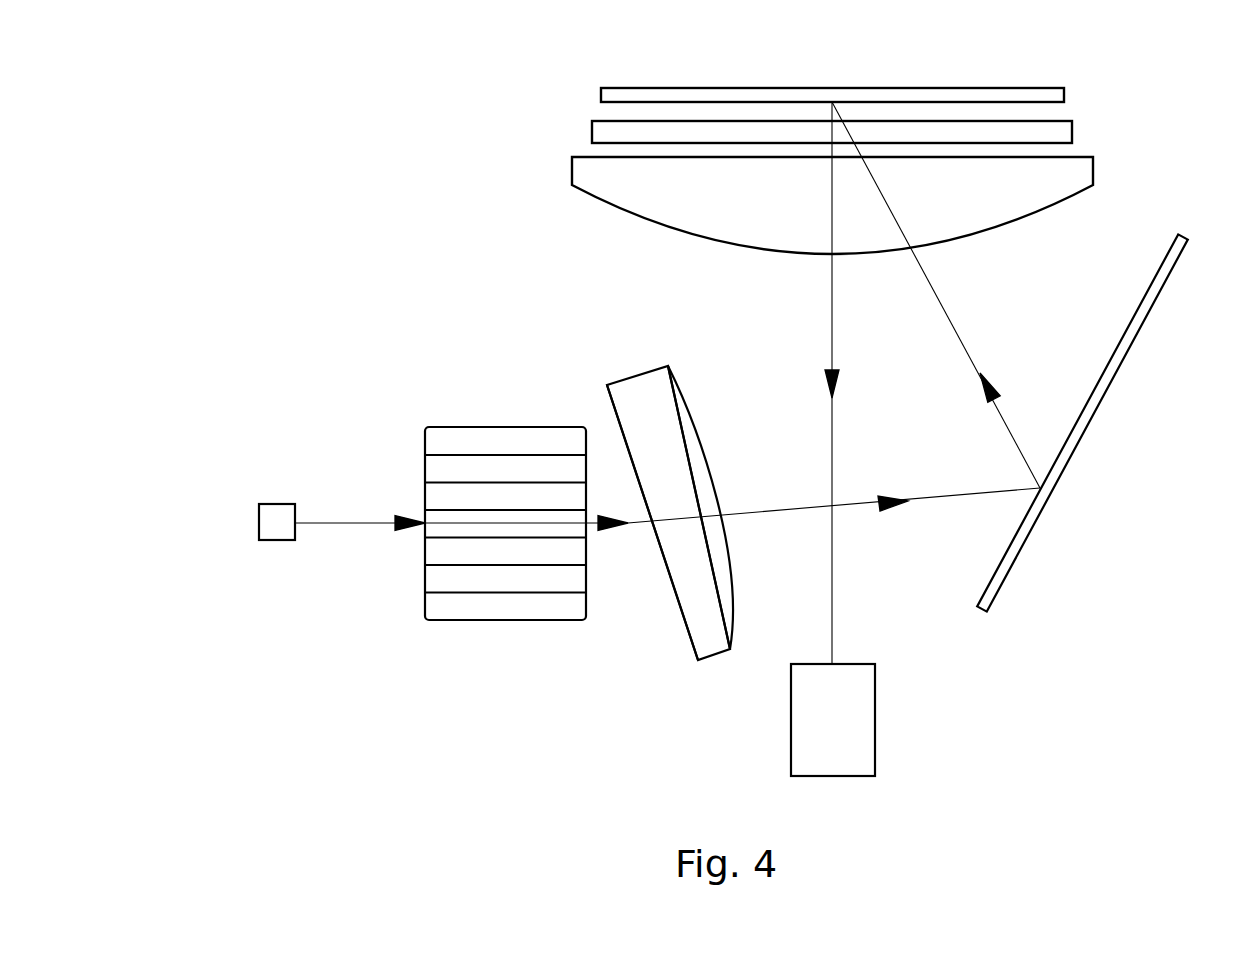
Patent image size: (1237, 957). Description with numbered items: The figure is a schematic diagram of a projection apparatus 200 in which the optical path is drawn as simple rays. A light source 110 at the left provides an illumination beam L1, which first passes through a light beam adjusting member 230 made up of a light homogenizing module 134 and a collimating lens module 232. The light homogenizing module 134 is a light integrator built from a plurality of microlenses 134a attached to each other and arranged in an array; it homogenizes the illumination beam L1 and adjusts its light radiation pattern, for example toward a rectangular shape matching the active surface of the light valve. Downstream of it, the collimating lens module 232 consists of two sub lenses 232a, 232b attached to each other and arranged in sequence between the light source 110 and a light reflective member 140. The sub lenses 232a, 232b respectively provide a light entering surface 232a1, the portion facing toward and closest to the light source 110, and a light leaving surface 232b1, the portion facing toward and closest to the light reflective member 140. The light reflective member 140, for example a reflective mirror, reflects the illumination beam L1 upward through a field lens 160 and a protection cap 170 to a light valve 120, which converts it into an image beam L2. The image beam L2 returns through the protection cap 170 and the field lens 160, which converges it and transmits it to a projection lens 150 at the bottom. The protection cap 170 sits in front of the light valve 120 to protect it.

The projection apparatus 200 is at (701, 405).
The light source 110 is at (278, 512).
The illumination beam L1 is at (353, 522).
The image beam L2 is at (832, 315).
The light beam adjusting member 230 is at (601, 491).
The light homogenizing module 134 is at (505, 445).
The microlenses 134a is at (455, 440).
The collimating lens module 232 is at (675, 512).
The sub lens 232a is at (654, 514).
The light entering surface 232a1 is at (688, 633).
The sub lens 232b is at (718, 534).
The light leaving surface 232b1 is at (733, 622).
The light reflective member 140 is at (1105, 382).
The projection lens 150 is at (868, 735).
The field lens 160 is at (583, 175).
The protection cap 170 is at (598, 132).
The light valve 120 is at (607, 95).